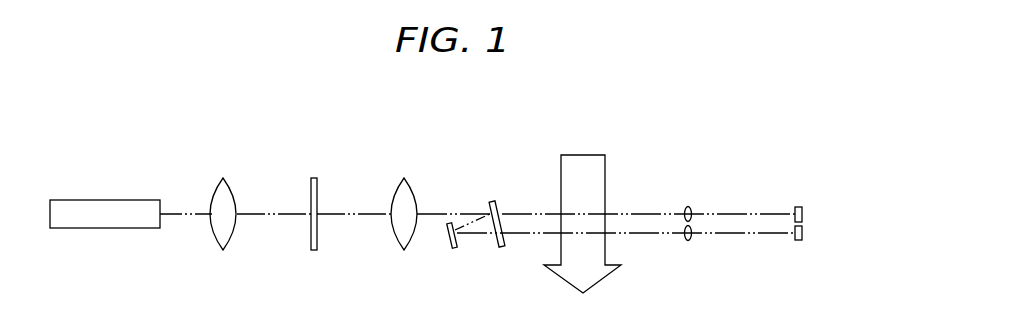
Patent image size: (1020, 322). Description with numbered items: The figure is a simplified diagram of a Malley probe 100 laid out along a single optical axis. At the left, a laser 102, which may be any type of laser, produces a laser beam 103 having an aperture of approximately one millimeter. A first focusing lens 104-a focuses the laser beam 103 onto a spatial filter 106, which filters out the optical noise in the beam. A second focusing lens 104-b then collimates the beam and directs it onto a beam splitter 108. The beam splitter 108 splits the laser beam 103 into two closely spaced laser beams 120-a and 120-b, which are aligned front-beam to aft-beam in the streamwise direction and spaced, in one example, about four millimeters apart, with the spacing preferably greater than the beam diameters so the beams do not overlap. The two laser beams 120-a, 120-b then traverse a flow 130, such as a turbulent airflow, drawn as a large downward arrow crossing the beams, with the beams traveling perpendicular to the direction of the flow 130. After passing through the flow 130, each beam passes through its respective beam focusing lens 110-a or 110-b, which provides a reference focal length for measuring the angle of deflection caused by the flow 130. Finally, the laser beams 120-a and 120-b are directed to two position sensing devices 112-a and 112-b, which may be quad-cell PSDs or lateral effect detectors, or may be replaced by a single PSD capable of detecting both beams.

The Malley probe 100 is at (674, 60).
The laser 102 is at (80, 200).
The laser beam 103 is at (185, 217).
The focusing lens 104-a is at (223, 180).
The spatial filter 106 is at (319, 180).
The focusing lens 104-b is at (404, 180).
The beam splitter 108 is at (478, 236).
The flow 130 is at (575, 155).
The beam focusing lens 110-a is at (688, 207).
The beam focusing lens 110-b is at (688, 240).
The laser beam 120-a is at (748, 212).
The laser beam 120-b is at (758, 236).
The position sensing device 112-a is at (802, 210).
The position sensing device 112-b is at (802, 237).